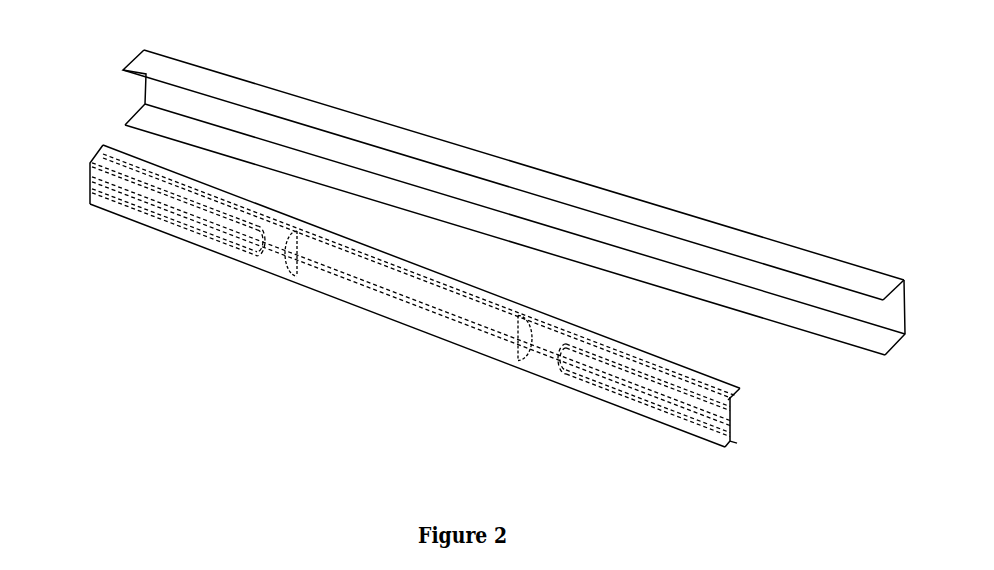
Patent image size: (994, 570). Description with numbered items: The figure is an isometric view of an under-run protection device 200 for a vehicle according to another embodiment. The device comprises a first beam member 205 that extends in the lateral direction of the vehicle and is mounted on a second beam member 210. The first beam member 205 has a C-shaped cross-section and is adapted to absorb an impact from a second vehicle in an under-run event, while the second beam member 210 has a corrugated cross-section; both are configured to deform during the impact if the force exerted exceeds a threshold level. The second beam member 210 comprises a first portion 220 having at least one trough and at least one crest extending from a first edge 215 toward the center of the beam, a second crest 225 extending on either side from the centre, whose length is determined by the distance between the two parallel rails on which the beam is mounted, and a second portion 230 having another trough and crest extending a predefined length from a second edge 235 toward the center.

The under-run protection device 200 is at (98, 115).
The first beam member 205 is at (287, 100).
The second beam member 210 is at (572, 329).
The first edge 215 is at (732, 422).
The first portion 220 is at (675, 400).
The second crest 225 is at (340, 263).
The second portion 230 is at (150, 198).
The second edge 235 is at (98, 147).